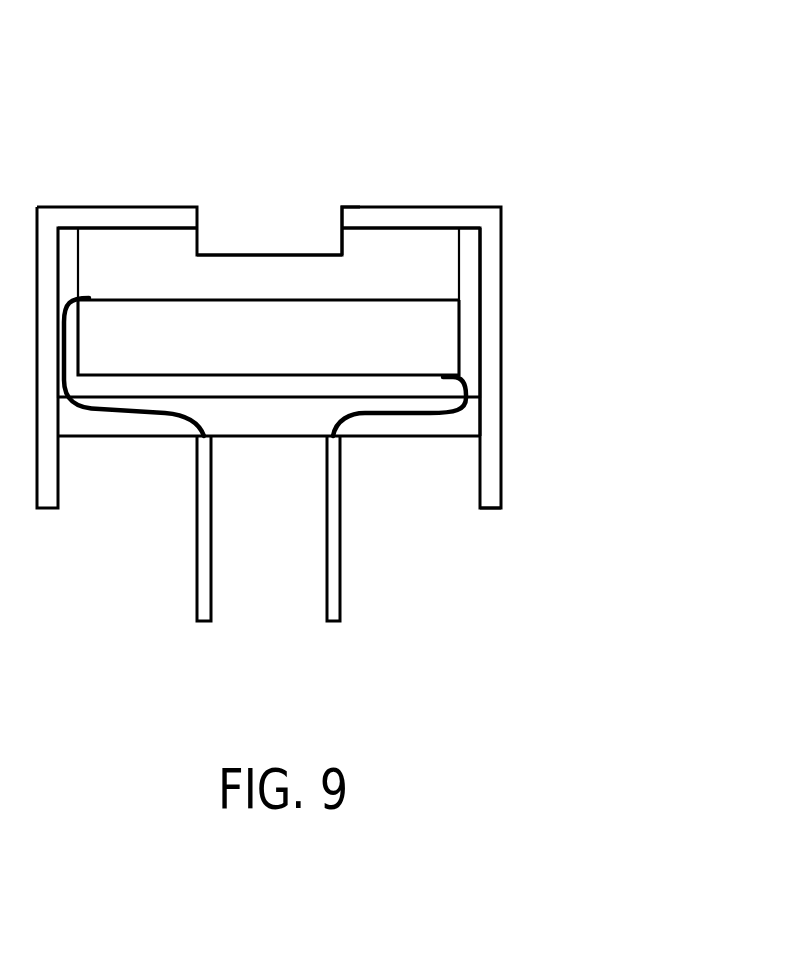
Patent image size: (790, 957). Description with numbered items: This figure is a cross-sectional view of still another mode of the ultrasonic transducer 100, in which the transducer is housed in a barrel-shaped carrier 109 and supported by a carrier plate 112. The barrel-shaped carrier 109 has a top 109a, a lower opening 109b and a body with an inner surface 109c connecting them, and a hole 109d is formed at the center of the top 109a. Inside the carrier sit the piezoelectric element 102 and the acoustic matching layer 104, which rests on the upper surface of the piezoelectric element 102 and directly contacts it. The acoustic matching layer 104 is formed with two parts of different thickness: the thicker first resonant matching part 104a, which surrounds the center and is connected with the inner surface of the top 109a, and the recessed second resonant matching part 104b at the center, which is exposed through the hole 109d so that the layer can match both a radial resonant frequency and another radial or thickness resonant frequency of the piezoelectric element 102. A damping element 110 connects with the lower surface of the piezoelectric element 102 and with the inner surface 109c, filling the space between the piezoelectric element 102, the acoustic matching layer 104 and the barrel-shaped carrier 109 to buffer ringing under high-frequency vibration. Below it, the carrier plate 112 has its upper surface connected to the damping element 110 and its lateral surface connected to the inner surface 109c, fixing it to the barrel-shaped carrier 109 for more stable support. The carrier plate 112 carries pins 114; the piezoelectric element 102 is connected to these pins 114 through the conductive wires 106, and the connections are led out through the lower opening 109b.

The ultrasonic transducer 100 is at (394, 99).
The piezoelectric element 102 is at (289, 355).
The acoustic matching layer 104 is at (289, 292).
The first resonant matching part 104a is at (127, 228).
The second resonant matching part 104b is at (243, 255).
The conductive wires 106 is at (125, 411).
The barrel-shaped carrier 109 is at (492, 415).
The top 109a is at (425, 226).
The lower opening 109b is at (480, 510).
The inner surface 109c is at (480, 355).
The hole 109d is at (342, 207).
The damping element 110 is at (473, 297).
The carrier plate 112 is at (407, 427).
The pins 114 is at (203, 577).